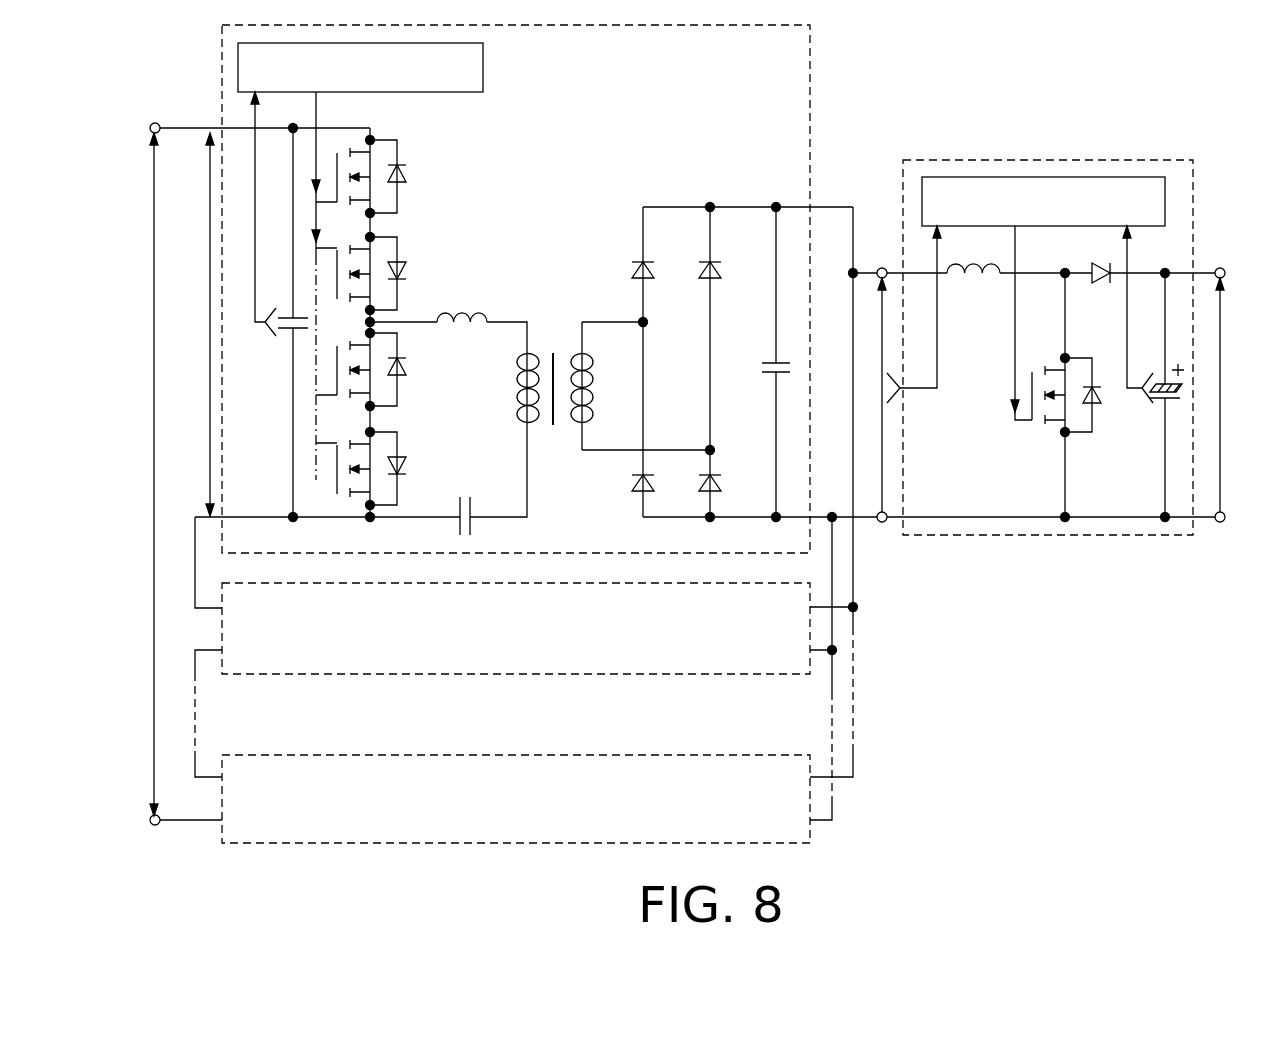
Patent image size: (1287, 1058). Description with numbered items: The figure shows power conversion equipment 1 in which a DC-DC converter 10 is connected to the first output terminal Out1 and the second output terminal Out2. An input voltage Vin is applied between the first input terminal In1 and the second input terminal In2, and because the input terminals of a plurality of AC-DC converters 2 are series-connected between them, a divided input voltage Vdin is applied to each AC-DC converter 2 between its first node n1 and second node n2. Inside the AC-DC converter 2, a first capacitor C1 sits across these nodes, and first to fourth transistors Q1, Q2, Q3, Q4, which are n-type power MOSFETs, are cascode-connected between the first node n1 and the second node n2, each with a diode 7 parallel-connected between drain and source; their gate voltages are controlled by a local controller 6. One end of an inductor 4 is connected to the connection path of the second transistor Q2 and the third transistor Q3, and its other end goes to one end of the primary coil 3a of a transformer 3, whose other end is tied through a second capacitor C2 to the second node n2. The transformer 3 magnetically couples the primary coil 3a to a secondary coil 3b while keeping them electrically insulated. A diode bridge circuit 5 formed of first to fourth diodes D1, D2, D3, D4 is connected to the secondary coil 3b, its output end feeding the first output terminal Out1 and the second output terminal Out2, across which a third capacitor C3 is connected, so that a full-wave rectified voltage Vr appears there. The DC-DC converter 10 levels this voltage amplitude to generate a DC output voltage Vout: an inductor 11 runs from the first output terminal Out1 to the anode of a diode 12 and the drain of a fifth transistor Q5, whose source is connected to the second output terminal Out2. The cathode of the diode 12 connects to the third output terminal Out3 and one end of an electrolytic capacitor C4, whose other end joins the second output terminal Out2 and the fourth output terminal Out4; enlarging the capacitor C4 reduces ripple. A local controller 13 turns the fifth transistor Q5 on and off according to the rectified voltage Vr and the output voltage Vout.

The power conversion equipment 1 is at (1027, 831).
The AC-DC converter 2 is at (810, 70).
The transformer 3 is at (590, 276).
The primary coil 3a is at (533, 346).
The secondary coil 3b is at (577, 346).
The inductor 4 is at (463, 312).
The diode bridge circuit 5 is at (680, 331).
The local controller 6 is at (483, 68).
The diode 7 is at (408, 173).
The DC-DC converter 10 is at (1040, 538).
The inductor 11 is at (969, 285).
The diode 12 is at (1100, 286).
The local controller 13 is at (1049, 176).
The first capacitor C1 is at (280, 340).
The second capacitor C2 is at (470, 500).
The third capacitor C3 is at (763, 362).
The electrolytic capacitor C4 is at (1152, 402).
The first diode D1 is at (631, 267).
The second diode D2 is at (632, 487).
The third diode D3 is at (699, 267).
The fourth diode D4 is at (726, 484).
The first transistor Q1 is at (347, 149).
The second transistor Q2 is at (347, 264).
The third transistor Q3 is at (347, 360).
The fourth transistor Q4 is at (347, 456).
The fifth transistor Q5 is at (1038, 421).
The first input terminal In1 is at (155, 122).
The second input terminal In2 is at (155, 826).
The first output terminal Out1 is at (882, 268).
The second output terminal Out2 is at (882, 523).
The third output terminal Out3 is at (1220, 268).
The fourth output terminal Out4 is at (1220, 523).
The first node n1 is at (188, 133).
The second node n2 is at (258, 516).
The input voltage Vin is at (137, 474).
The divided input voltage Vdin is at (193, 324).
The full-wave rectified voltage Vr is at (895, 395).
The output voltage Vout is at (1251, 395).